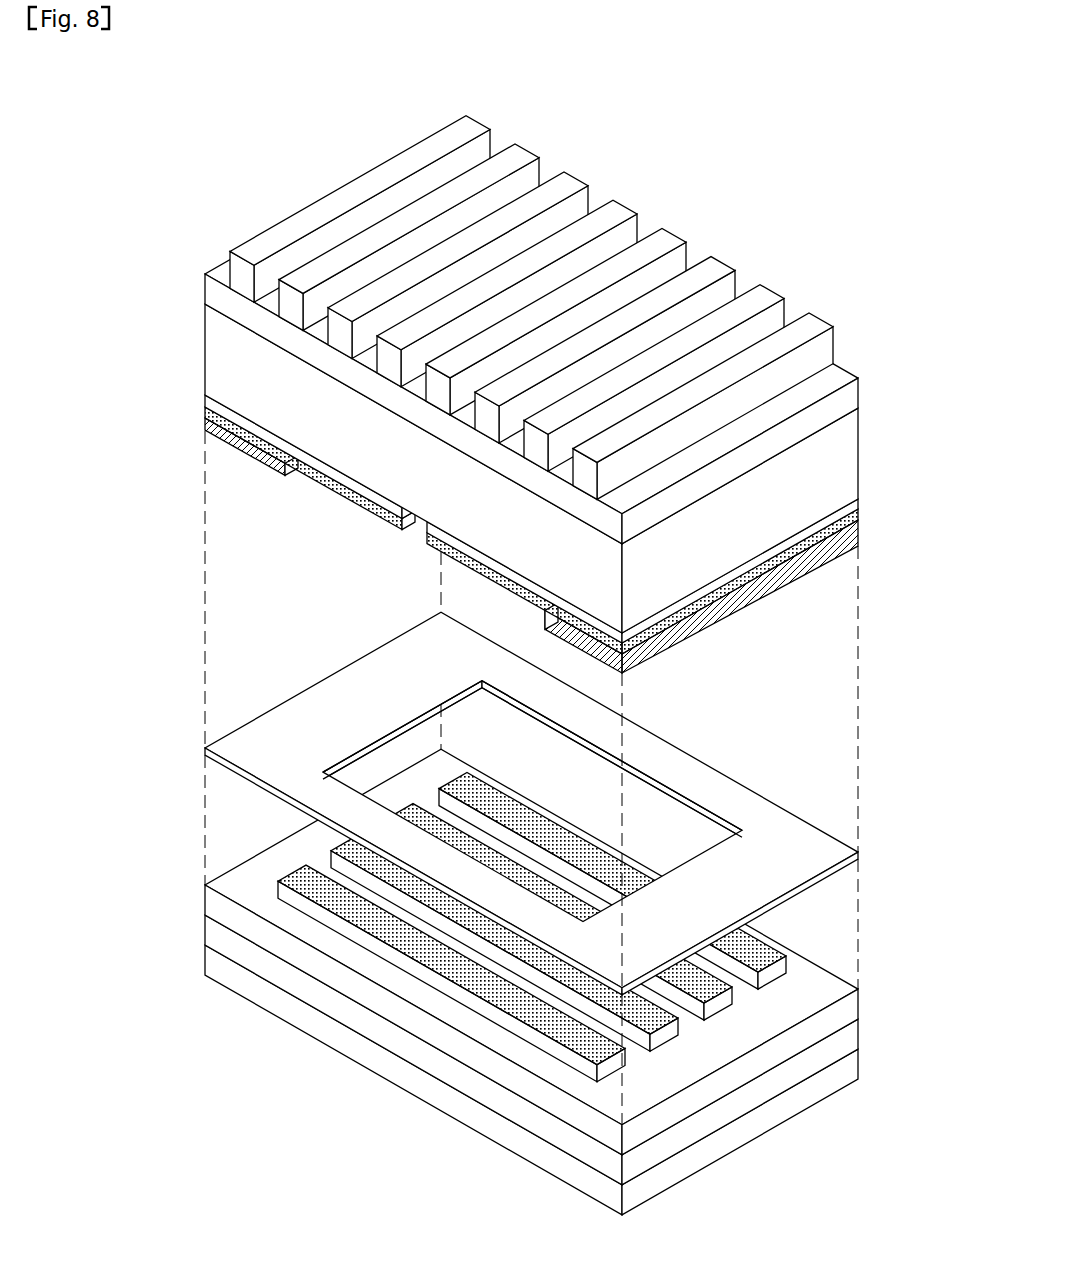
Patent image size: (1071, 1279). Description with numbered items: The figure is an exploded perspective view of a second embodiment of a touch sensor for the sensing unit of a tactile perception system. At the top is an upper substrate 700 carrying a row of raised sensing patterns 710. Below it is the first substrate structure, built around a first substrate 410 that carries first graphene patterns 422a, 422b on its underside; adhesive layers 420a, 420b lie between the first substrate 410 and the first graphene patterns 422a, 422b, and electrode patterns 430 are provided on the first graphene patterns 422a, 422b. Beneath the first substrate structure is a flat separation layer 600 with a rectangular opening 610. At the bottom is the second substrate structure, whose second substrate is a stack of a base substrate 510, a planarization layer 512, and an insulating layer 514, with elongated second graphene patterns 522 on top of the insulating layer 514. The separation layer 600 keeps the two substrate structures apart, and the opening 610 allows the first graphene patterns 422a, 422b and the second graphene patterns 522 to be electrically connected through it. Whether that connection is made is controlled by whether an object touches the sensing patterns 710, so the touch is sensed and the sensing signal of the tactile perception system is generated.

The upper substrate 700 is at (858, 394).
The sensing patterns 710 is at (570, 184).
The first substrate 410 is at (858, 456).
The adhesive layer 420a is at (858, 503).
The adhesive layer 420b is at (205, 395).
The first graphene pattern 422a is at (858, 514).
The first graphene pattern 422b is at (205, 408).
The electrode patterns 430 is at (205, 424).
The separation layer 600 is at (858, 853).
The opening 610 is at (664, 826).
The second graphene patterns 522 is at (766, 960).
The insulating layer 514 is at (858, 1005).
The planarization layer 512 is at (858, 1036).
The base substrate 510 is at (858, 1066).